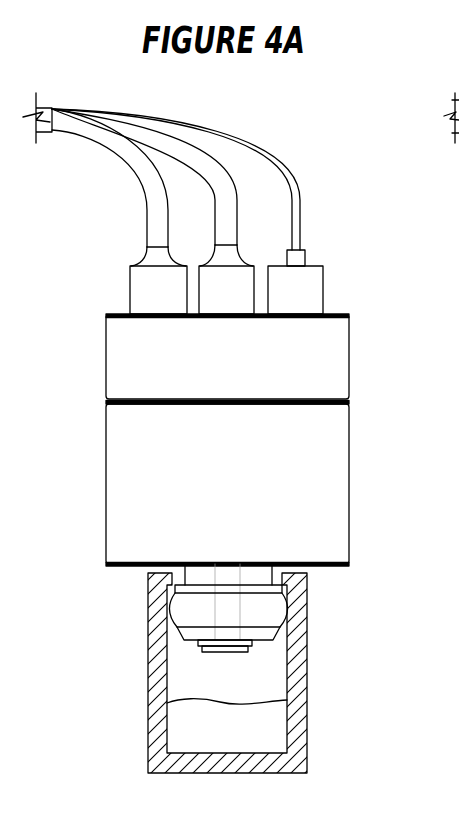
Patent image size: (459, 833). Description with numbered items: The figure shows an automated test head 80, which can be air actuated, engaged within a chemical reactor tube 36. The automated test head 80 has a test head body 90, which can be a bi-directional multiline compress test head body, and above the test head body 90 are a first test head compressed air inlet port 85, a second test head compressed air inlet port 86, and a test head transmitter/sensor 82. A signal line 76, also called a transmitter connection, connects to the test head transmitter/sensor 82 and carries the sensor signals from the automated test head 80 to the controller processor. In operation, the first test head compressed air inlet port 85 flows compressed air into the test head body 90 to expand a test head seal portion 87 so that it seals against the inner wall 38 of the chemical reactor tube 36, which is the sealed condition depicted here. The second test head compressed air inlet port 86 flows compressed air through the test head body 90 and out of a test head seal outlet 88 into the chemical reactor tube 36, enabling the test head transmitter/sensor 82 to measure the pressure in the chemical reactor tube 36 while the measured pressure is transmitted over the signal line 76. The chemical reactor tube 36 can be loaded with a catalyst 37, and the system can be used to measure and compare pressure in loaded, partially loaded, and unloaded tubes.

The signal line 76 is at (258, 149).
The first test head compressed air inlet port 85 is at (130, 290).
The second test head compressed air inlet port 86 is at (241, 257).
The test head transmitter/sensor 82 is at (323, 290).
The test head body 90 is at (348, 463).
The automated test head 80 is at (269, 508).
The test head seal portion 87 is at (290, 608).
The test head seal outlet 88 is at (227, 666).
The chemical reactor tube 36 is at (148, 583).
The catalyst 37 is at (273, 701).
The inner wall 38 is at (167, 663).